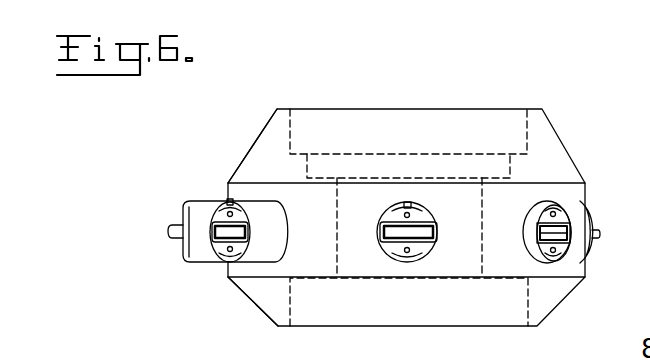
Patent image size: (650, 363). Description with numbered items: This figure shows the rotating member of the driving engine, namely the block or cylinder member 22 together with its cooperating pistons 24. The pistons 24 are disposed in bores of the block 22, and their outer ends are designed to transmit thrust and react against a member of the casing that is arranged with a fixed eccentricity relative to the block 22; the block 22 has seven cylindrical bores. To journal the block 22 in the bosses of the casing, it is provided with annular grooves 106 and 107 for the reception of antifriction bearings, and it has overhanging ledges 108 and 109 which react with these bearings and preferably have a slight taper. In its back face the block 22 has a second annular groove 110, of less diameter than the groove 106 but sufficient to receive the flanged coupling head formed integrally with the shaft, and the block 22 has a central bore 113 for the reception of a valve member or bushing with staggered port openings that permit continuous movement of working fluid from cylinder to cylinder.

The block or cylinder member 22 is at (591, 189).
The cooperating pistons 24 is at (257, 250).
The annular groove 106 is at (293, 128).
The annular groove 107 is at (292, 300).
The over-hanging ledge 108 is at (283, 106).
The over-hanging ledge 109 is at (289, 328).
The second annular groove 110 is at (523, 132).
The central bore 113 is at (337, 207).